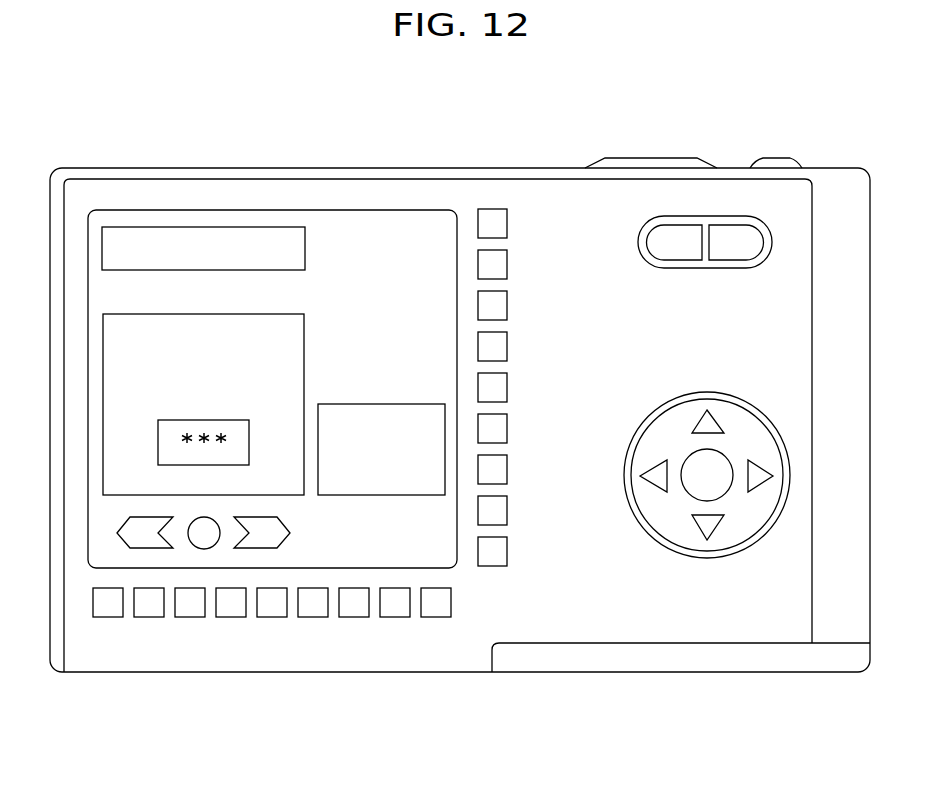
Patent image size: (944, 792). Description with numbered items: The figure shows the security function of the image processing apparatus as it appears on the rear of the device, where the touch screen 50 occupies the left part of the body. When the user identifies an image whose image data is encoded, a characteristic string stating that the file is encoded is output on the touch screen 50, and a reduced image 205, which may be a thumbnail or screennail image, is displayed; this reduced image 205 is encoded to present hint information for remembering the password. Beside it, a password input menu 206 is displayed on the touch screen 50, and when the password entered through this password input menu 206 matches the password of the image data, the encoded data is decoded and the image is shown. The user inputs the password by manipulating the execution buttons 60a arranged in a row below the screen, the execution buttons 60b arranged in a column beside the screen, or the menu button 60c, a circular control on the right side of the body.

The touch screen 50 is at (273, 200).
The reduced image 205 is at (205, 314).
The password input menu 206 is at (377, 400).
The execution buttons 60a is at (452, 635).
The execution buttons 60b is at (520, 209).
The menu button 60c is at (707, 392).